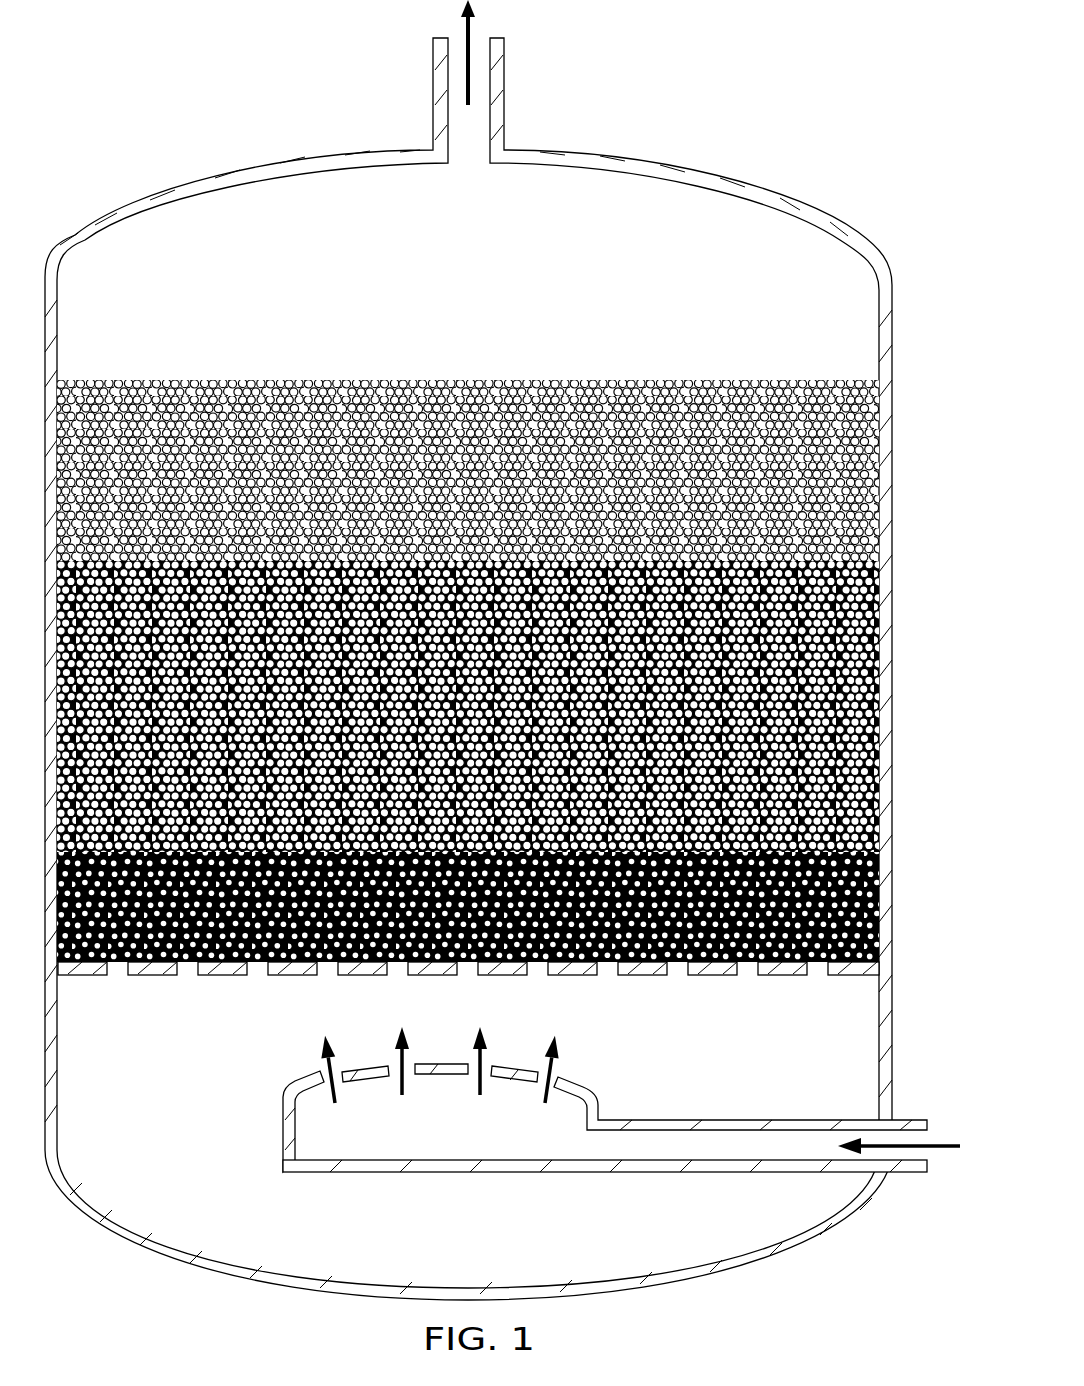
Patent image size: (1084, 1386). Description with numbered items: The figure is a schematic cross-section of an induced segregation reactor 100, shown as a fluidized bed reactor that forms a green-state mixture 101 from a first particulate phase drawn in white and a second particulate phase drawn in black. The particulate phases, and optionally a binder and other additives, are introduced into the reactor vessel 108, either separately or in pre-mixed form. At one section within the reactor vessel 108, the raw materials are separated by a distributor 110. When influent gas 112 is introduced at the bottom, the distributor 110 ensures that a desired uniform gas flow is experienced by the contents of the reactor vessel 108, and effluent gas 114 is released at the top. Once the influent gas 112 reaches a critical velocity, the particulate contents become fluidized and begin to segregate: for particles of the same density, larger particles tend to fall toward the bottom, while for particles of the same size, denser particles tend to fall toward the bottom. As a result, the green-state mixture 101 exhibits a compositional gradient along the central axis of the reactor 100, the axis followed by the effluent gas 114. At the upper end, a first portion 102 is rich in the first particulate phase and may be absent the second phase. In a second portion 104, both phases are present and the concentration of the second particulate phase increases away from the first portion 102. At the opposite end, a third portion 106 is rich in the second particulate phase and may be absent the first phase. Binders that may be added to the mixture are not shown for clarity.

The induced segregation reactor 100 is at (723, 68).
The green-state mixture 101 is at (508, 628).
The first portion 102 is at (900, 382).
The second portion 104 is at (900, 566).
The third portion 106 is at (900, 855).
The reactor vessel 108 is at (276, 167).
The distributor 110 is at (151, 976).
The influent gas 112 is at (938, 1174).
The effluent gas 114 is at (461, 22).